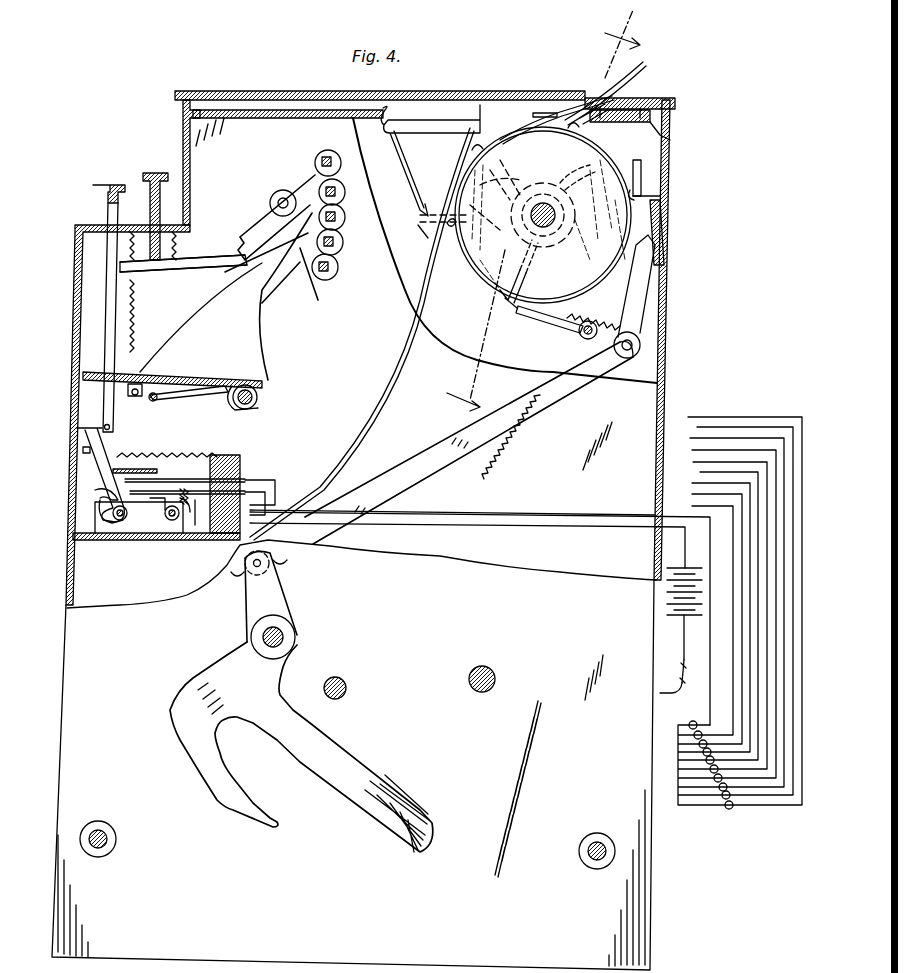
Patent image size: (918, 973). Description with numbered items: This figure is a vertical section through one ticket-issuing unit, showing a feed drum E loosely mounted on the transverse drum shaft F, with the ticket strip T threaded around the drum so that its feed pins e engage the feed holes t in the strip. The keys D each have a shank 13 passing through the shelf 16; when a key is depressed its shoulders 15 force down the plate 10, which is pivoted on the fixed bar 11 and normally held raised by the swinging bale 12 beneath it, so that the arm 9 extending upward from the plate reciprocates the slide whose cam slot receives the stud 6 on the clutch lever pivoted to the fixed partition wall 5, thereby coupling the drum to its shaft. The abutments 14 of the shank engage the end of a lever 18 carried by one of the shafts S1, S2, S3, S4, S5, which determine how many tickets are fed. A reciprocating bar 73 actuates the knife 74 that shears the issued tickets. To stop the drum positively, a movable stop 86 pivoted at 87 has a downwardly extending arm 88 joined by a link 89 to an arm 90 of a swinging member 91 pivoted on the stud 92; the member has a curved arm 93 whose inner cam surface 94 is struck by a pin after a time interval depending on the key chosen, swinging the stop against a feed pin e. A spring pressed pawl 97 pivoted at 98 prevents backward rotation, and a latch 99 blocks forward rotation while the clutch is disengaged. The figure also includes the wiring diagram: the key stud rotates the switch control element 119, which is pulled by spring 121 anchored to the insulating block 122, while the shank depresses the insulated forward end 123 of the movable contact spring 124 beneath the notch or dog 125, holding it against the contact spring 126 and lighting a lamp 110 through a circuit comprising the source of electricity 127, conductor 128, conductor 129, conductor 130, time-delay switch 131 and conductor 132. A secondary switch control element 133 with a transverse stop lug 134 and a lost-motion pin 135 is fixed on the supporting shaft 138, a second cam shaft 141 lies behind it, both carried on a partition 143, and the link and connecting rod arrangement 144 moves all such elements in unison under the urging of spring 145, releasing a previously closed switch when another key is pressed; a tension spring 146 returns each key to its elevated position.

The fixed partition wall 5 is at (675, 157).
The stud 6 is at (543, 212).
The arm 9 is at (268, 272).
The plate 10 is at (262, 378).
The fixed bar 11 is at (258, 395).
The swinging bale 12 is at (150, 400).
The shank 13 is at (162, 206).
The abutments 14 is at (118, 264).
The shoulders 15 is at (135, 372).
The shelf 16 is at (92, 225).
The lever 18 is at (306, 170).
The bar 73 is at (655, 117).
The knife 74 is at (602, 110).
The movable stop 86 is at (662, 200).
The pivot 87 is at (665, 260).
The downwardly extending arm 88 is at (640, 322).
The link 89 is at (440, 466).
The arm 90 is at (290, 584).
The swinging member 91 is at (301, 747).
The stud 92 is at (285, 633).
The curved arm 93 is at (200, 773).
The inner cam surface 94 is at (232, 778).
The spring pressed pawl 97 is at (545, 320).
The pivot 98 is at (580, 337).
The latch 99 is at (505, 306).
The lamp 110 is at (693, 720).
The switch control element 119 is at (98, 478).
The spring 121 is at (170, 452).
The insulating block 122 is at (235, 455).
The insulated forward end 123 is at (112, 455).
The movable electrical switch contact spring 124 is at (185, 478).
The notch or dog 125 is at (105, 492).
The contact spring 126 is at (225, 452).
The source of electricity 127 is at (684, 615).
The conductor 128 is at (382, 525).
The conductor 129 is at (282, 492).
The conductor 130 is at (660, 693).
The time-delay switch 131 is at (680, 670).
The conductor 132 is at (675, 638).
The secondary switch control element 133 is at (85, 430).
The transverse stop lug 134 is at (82, 451).
The pin 135 is at (108, 508).
The supporting shaft 138 is at (112, 540).
The second cam shaft 141 is at (172, 522).
The partition 143 is at (160, 542).
The link and connecting rod arrangement 144 is at (125, 522).
The spring 145 is at (200, 527).
The tension spring 146 is at (135, 332).
The shaft S1 is at (325, 152).
The shaft S2 is at (340, 190).
The shaft S3 is at (340, 218).
The shaft S4 is at (340, 243).
The shaft S5 is at (335, 272).
The feed drum E is at (525, 213).
The drum shaft F is at (577, 172).
The feed pins e is at (430, 262).
The keys D is at (118, 178).
The ticket strip T is at (640, 70).
The feed holes t is at (345, 458).